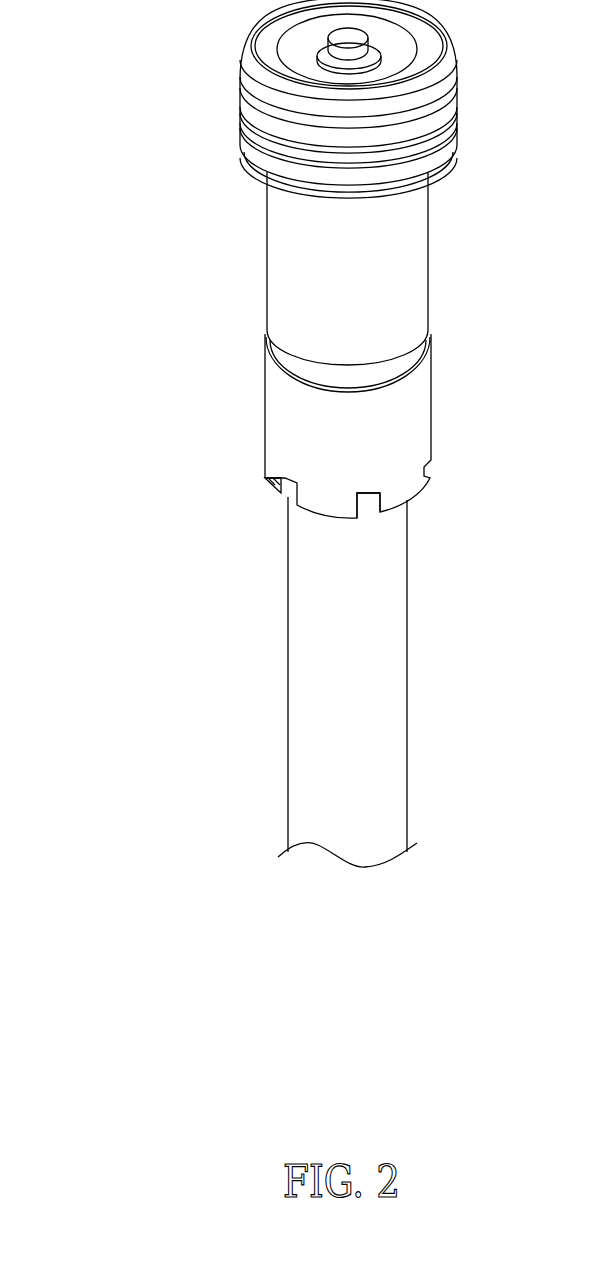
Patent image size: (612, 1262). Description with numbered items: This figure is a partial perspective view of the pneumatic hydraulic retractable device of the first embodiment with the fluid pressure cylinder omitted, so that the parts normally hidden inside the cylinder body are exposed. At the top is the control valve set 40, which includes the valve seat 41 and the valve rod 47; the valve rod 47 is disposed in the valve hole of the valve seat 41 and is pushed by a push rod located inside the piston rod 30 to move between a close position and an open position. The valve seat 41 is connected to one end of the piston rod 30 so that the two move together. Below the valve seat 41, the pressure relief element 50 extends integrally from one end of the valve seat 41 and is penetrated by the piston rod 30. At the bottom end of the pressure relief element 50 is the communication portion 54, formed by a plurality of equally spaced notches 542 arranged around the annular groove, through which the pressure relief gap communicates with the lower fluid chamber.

The control valve set 40 is at (105, 42).
The valve rod 47 is at (343, 33).
The valve seat 41 is at (320, 248).
The pressure relief element 50 is at (397, 415).
The communication portion 54 is at (267, 482).
The notch 542 is at (370, 510).
The piston rod 30 is at (368, 717).